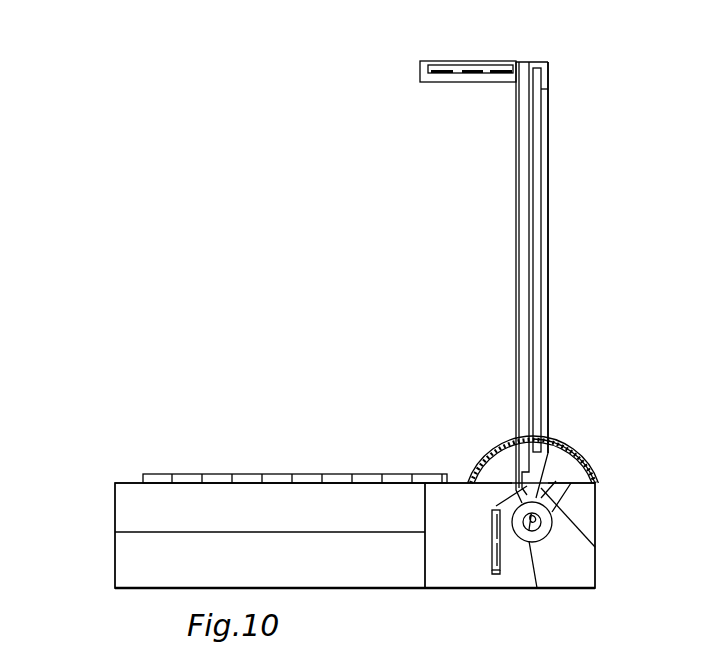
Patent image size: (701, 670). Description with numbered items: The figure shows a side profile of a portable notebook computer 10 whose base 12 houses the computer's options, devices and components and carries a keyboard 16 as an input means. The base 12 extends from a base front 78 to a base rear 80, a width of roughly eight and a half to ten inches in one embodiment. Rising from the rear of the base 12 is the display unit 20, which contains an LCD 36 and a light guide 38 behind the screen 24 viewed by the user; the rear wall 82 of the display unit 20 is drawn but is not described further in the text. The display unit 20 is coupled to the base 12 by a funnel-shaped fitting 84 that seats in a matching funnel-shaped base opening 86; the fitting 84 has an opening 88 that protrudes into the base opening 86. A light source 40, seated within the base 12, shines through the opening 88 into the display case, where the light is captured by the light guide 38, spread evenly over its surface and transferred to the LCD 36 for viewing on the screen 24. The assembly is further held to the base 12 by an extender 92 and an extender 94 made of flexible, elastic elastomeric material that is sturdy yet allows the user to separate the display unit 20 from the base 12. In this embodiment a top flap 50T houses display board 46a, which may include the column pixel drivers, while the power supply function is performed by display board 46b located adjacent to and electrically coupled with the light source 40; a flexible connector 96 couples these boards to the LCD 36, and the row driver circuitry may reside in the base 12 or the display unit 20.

The portable notebook computer 10 is at (92, 598).
The base 12 is at (324, 579).
The keyboard 16 is at (165, 474).
The display unit 20 is at (522, 62).
The screen 24 is at (516, 335).
The LCD 36 is at (525, 212).
The light guide 38 is at (540, 82).
The light source 40 is at (545, 541).
The display board 46a is at (452, 61).
The display board 46b is at (493, 571).
The top flap 50T is at (422, 72).
The base front 78 is at (115, 518).
The base rear 80 is at (597, 500).
The mast rear wall 82 is at (549, 163).
The fitting 84 is at (575, 482).
The base opening 86 is at (595, 547).
The opening 88 is at (512, 498).
The extender 92 is at (512, 435).
The extender 94 is at (575, 452).
The flexible connector 96 is at (496, 503).